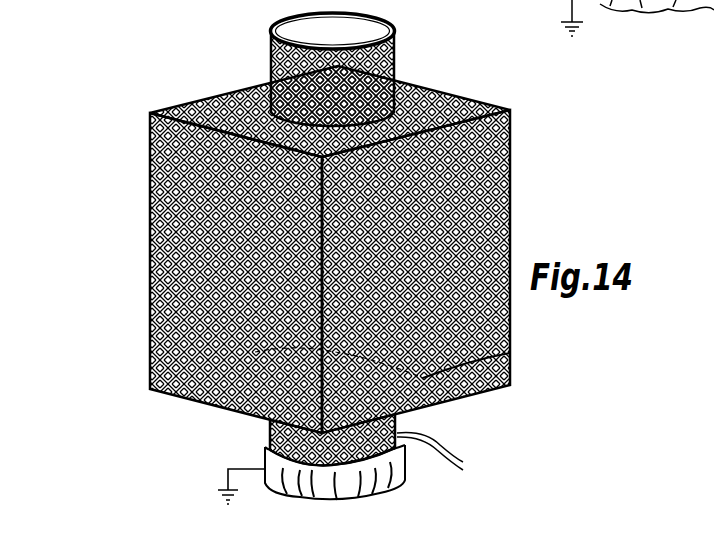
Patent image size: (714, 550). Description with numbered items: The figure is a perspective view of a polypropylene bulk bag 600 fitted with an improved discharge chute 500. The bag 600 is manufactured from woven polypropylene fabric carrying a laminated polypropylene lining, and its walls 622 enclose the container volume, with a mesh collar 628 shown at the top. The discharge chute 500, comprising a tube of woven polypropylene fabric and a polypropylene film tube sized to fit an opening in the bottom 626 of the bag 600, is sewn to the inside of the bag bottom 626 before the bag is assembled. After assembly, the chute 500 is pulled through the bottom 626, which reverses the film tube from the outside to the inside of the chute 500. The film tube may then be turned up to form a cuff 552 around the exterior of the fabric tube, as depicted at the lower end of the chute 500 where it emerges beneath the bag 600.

The bulk bag 600 is at (133, 160).
The conductive mesh enclosure 622 is at (177, 225).
The bottom 626 is at (510, 353).
The mesh collar 628 is at (394, 52).
The discharge chute 500 is at (270, 436).
The cuff 552 is at (405, 470).